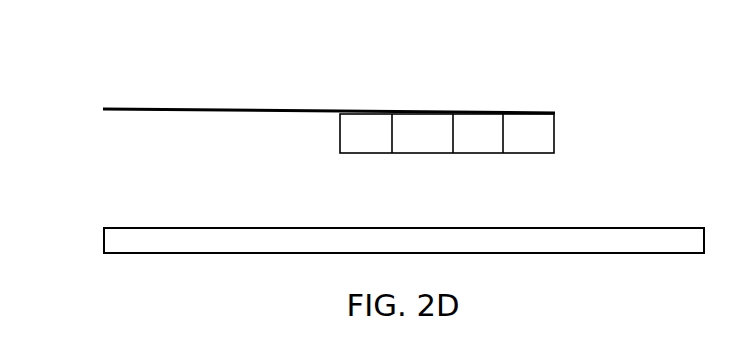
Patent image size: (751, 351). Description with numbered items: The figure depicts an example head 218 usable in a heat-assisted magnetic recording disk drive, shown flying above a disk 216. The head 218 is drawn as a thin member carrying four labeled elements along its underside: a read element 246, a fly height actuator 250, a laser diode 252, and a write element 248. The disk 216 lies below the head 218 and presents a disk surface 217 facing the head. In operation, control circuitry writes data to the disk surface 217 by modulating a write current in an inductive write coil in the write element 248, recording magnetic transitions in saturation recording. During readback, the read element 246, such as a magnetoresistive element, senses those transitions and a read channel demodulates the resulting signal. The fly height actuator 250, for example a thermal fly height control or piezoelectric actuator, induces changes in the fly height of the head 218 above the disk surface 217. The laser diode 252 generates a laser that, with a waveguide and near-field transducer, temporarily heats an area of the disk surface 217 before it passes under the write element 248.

The disk 216 is at (109, 232).
The disk surface 217 is at (290, 216).
The head 218 is at (578, 114).
The read element 246 is at (347, 114).
The fly height actuator 250 is at (410, 114).
The laser diode 252 is at (472, 114).
The write element 248 is at (522, 114).